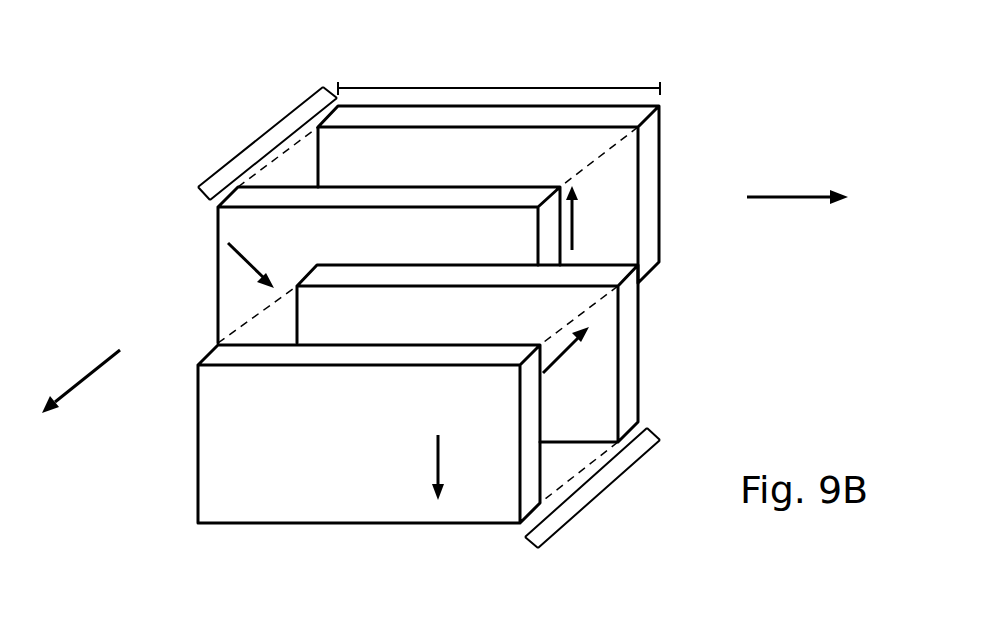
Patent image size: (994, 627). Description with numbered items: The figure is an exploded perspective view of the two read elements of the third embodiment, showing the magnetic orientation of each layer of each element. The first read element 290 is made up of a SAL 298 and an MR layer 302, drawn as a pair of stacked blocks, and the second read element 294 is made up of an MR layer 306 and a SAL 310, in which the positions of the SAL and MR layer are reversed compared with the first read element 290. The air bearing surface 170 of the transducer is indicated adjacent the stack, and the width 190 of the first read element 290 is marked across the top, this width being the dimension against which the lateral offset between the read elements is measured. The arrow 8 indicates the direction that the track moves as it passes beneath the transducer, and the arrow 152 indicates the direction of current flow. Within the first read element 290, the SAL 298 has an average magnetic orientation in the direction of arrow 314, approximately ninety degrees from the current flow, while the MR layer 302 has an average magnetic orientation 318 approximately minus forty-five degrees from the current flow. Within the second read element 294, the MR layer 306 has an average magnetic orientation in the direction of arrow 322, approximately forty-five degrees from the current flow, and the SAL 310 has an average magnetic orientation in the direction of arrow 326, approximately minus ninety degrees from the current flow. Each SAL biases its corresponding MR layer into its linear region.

The arrow indicating direction of track movement 8 is at (87, 377).
The arrow indicating direction of current flow 152 is at (788, 200).
The air bearing surface 170 is at (613, 274).
The width of the first read element 190 is at (543, 88).
The first read element 290 is at (258, 137).
The second read element 294 is at (593, 502).
The SAL 298 is at (652, 128).
The MR layer 302 is at (233, 295).
The MR layer 306 is at (627, 385).
The SAL 310 is at (217, 475).
The arrow indicating average magnetic orientation of SAL 314 is at (575, 238).
The average magnetic orientation of MR layer 318 is at (253, 262).
The arrow indicating average magnetic orientation of MR layer 322 is at (567, 360).
The arrow indicating average magnetic orientation of SAL 326 is at (440, 477).